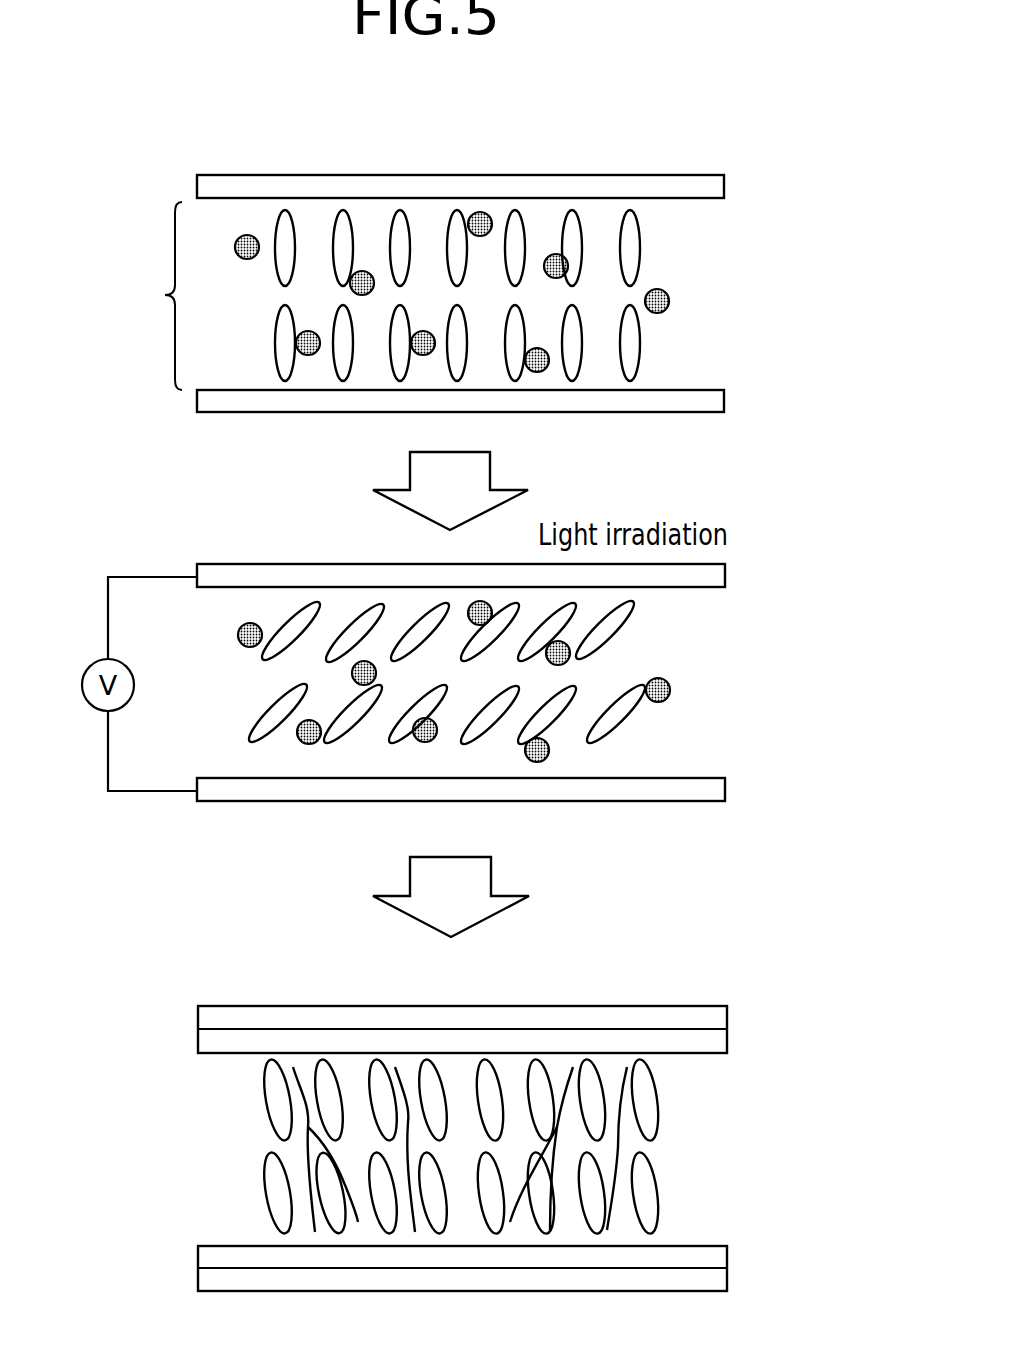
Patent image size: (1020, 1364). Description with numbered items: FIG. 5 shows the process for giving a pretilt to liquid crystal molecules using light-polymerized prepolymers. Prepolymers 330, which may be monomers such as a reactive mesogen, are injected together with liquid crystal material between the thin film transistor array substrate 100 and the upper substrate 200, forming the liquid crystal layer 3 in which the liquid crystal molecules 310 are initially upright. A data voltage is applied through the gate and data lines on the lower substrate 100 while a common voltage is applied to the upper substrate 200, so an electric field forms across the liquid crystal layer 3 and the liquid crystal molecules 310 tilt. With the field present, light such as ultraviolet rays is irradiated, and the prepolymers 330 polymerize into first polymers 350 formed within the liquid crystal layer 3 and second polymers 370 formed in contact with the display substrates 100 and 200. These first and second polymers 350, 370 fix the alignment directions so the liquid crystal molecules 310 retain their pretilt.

The liquid crystal layer 3 is at (160, 296).
The thin film transistor array substrate 100 is at (197, 398).
The upper substrate 200 is at (197, 186).
The liquid crystal molecules 310 is at (640, 246).
The prepolymers 330 is at (670, 300).
The first polymers 350 is at (618, 1150).
The second polymers 370 is at (727, 1041).